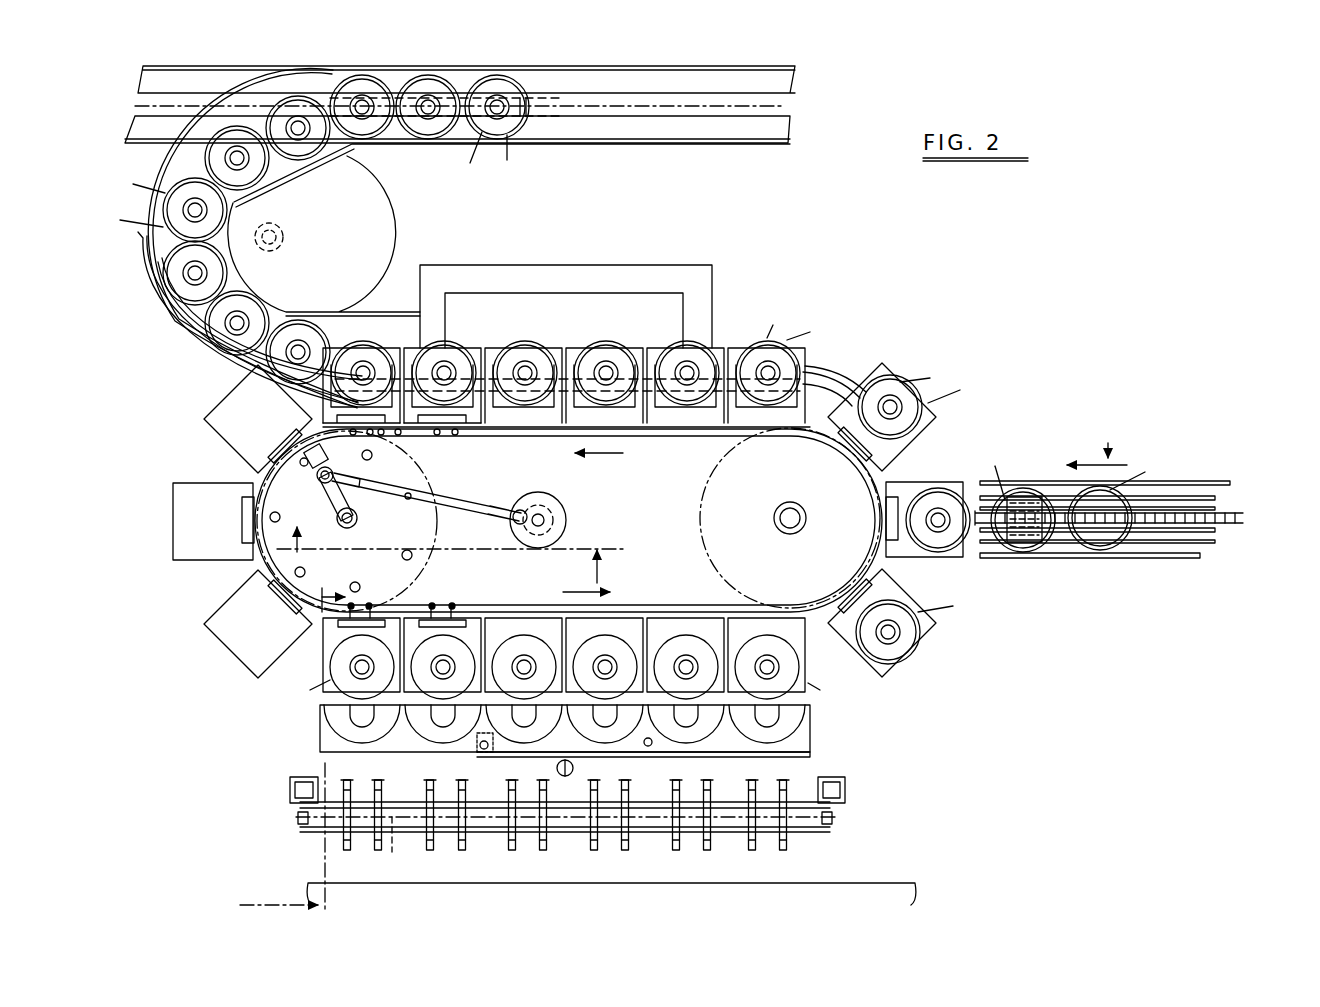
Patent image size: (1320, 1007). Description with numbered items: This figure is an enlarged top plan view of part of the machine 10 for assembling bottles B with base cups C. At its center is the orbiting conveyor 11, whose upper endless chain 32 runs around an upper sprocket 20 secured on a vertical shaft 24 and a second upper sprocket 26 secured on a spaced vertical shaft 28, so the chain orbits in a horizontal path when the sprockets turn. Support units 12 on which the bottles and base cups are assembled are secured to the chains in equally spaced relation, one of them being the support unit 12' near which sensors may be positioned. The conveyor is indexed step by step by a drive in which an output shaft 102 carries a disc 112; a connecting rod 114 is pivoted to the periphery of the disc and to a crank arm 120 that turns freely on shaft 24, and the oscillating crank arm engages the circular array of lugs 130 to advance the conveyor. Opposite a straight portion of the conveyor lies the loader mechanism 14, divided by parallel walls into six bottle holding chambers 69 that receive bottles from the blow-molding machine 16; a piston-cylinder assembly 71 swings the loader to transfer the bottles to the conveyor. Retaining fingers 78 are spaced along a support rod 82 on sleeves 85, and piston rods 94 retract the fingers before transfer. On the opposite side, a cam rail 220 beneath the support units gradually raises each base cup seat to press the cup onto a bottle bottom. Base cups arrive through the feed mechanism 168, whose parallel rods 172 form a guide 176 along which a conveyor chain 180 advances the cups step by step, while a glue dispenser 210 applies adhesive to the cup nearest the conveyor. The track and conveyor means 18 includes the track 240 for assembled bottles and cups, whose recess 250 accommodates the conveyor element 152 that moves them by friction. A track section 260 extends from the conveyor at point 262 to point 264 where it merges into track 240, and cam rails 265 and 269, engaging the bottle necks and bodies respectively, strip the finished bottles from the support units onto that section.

The machine 10 is at (303, 735).
The orbiting conveyor 11 is at (858, 378).
The support units 12 is at (585, 529).
The support unit 12' is at (910, 623).
The loader mechanism 14 is at (826, 753).
The blow-molding machine 16 is at (596, 703).
The track and conveyor means 18 is at (655, 152).
The upper sprocket 20 is at (433, 475).
The vertical shaft 24 is at (358, 523).
The upper sprocket 26 is at (707, 490).
The vertical shaft 28 is at (778, 531).
The upper endless chain 32 is at (512, 432).
The bottle holding chambers 69 is at (362, 735).
The piston-cylinder assembly 71 is at (556, 768).
The retaining fingers 78 is at (433, 852).
The support rod 82 is at (390, 847).
The sleeves 85 is at (665, 766).
The piston rods 94 is at (320, 806).
The output shaft 102 is at (552, 527).
The disc 112 is at (565, 508).
The connecting rod 114 is at (458, 508).
The crank arm 120 is at (350, 500).
The lugs 130 is at (370, 565).
The conveyor element 152 is at (538, 112).
The feed mechanism 168 is at (1099, 444).
The parallel rods 172 is at (1217, 480).
The guide 176 is at (1230, 505).
The conveyor chain 180 is at (1233, 525).
The glue dispenser 210 is at (1022, 542).
The cam rail 220 is at (866, 330).
The track 240 is at (793, 70).
The recess 250 is at (667, 108).
The track section 260 is at (150, 279).
The point 262 is at (365, 355).
The point 264 is at (330, 74).
The cam rail 265 is at (192, 307).
The cam rail 269 is at (215, 352).
The bottles B is at (545, 420).
The base cups C is at (629, 317).